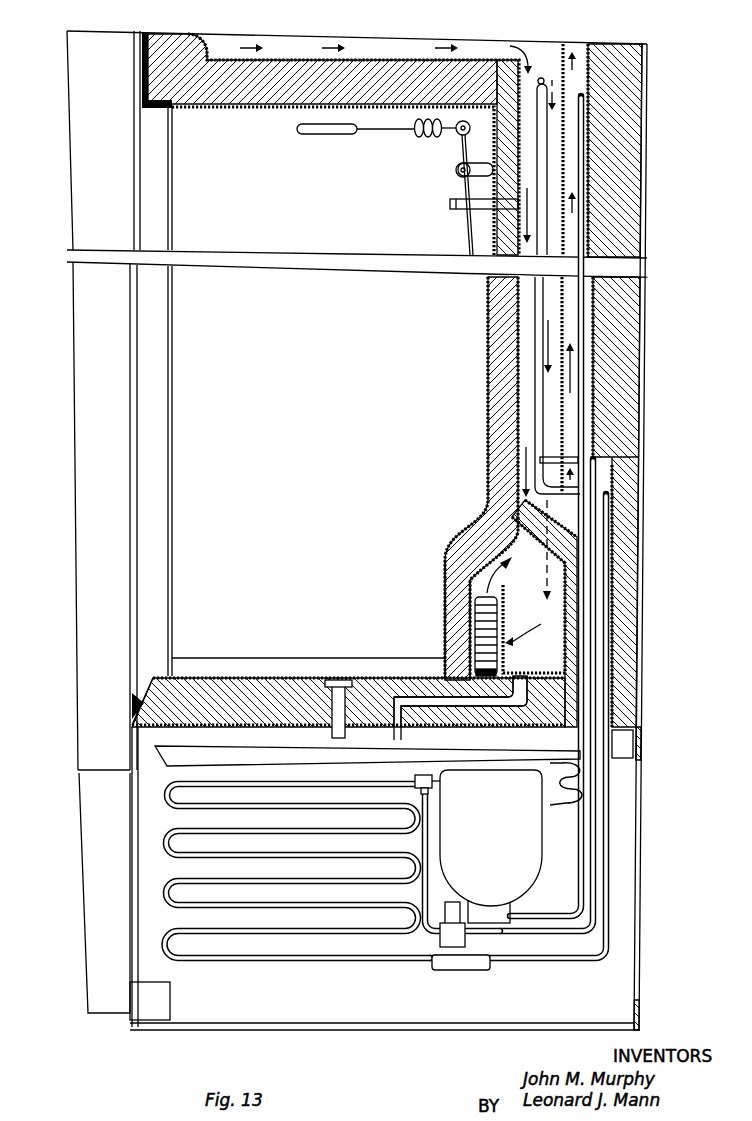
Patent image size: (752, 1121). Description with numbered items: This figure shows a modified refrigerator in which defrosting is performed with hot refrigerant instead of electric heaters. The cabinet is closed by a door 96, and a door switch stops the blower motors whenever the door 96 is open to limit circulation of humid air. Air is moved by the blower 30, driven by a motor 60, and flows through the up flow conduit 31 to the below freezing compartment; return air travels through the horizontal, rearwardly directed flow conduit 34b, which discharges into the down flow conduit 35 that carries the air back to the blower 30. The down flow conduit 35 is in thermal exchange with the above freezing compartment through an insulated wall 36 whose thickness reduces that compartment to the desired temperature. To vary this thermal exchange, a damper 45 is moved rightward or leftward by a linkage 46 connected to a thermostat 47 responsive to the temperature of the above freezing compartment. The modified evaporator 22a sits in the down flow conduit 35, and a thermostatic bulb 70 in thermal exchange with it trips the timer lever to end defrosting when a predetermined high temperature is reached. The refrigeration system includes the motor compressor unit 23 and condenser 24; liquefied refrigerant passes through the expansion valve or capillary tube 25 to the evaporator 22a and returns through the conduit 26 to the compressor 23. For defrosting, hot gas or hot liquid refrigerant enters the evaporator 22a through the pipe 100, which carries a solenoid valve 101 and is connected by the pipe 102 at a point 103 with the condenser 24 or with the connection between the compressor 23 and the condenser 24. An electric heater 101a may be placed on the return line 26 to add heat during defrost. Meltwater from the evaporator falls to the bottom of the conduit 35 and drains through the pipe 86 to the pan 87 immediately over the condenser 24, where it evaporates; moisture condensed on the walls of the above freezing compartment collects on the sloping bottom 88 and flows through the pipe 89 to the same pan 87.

The door 96 is at (77, 352).
The up flow conduit 31 is at (572, 146).
The horizontal rearwardly directed flow conduit 34b is at (360, 46).
The down flow conduit 35 is at (545, 79).
The thermostatic bulb 70 is at (560, 73).
The thermostat 47 is at (300, 134).
The linkage 46 is at (458, 186).
The damper 45 is at (497, 231).
The evaporator 22a is at (538, 300).
The insulated wall 36 is at (488, 366).
The pipe 100 is at (597, 480).
The motor 60 is at (457, 602).
The blower 30 is at (498, 658).
The sloping bottom 88 is at (200, 677).
The pipe 86 is at (422, 701).
The pipe 89 is at (338, 700).
The pan 87 is at (422, 752).
The condenser 24 is at (297, 935).
The pipe 102 is at (428, 853).
The connection point 103 is at (437, 783).
The motor compressor unit 23 is at (535, 842).
The solenoid valve 101 is at (458, 934).
The expansion valve or capillary tube 25 is at (458, 968).
The electric heater 101a is at (566, 768).
The conduit 26 is at (547, 912).